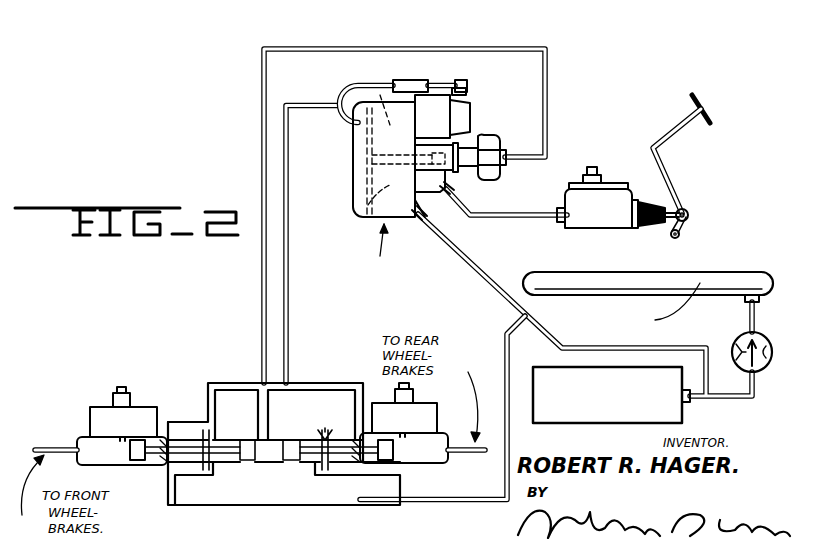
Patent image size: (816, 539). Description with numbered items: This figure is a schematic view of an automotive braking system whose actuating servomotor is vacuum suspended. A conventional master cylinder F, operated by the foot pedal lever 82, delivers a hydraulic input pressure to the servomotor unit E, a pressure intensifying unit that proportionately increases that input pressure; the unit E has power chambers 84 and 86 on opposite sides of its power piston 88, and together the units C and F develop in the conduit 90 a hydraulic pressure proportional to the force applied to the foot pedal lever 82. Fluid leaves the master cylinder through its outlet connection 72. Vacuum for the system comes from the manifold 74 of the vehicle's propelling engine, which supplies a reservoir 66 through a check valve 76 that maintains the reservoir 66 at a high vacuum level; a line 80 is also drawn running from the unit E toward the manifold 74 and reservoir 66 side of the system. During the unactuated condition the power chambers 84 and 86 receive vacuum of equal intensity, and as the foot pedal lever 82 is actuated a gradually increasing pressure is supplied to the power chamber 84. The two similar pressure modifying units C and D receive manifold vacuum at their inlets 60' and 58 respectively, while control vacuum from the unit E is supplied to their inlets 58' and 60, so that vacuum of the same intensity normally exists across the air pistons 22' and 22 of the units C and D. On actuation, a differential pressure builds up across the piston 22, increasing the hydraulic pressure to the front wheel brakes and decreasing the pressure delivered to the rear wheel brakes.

The air piston 22 is at (300, 422).
The air piston 22' is at (235, 473).
The inlet 58 is at (299, 489).
The inlet 58' is at (235, 424).
The inlet 60 is at (336, 408).
The inlet 60' is at (203, 489).
The reservoir 66 is at (680, 415).
The outlet connection 72 is at (262, 275).
The manifold 74 is at (655, 276).
The check valve 76 is at (732, 350).
The vacuum line 80 is at (470, 270).
The foot pedal lever 82 is at (705, 104).
The power chamber 84 is at (353, 146).
The power chamber 86 is at (383, 92).
The power piston 88 is at (352, 176).
The conduit 90 is at (289, 258).
The pressure modifying unit C is at (185, 420).
The pressure modifying unit D is at (366, 402).
The servomotor unit E is at (406, 168).
The master cylinder F is at (595, 172).